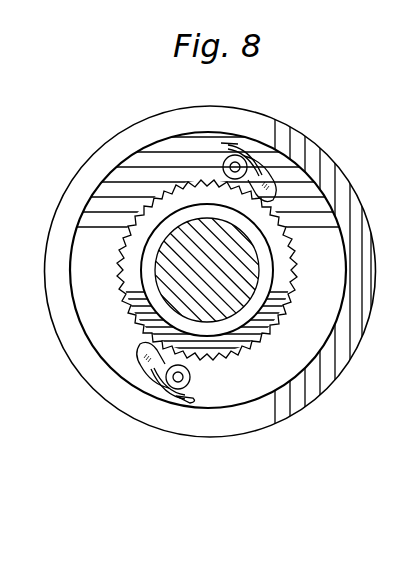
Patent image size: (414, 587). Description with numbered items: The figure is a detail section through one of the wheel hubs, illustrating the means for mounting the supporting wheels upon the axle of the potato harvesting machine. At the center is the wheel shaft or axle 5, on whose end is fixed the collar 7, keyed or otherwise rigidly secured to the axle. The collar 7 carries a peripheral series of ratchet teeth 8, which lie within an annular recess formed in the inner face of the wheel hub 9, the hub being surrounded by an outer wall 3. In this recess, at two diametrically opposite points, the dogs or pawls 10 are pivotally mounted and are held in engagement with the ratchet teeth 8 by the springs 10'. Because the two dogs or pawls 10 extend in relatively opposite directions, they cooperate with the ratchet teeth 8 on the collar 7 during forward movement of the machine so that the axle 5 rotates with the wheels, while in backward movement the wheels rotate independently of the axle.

The housing 3 is at (230, 272).
The wheel shaft or axle 5 is at (257, 275).
The collar 7 is at (143, 283).
The ratchet teeth 8 is at (245, 348).
The wheel hub 9 is at (320, 327).
The dog or pawl 10 is at (222, 290).
The spring 10' is at (166, 429).